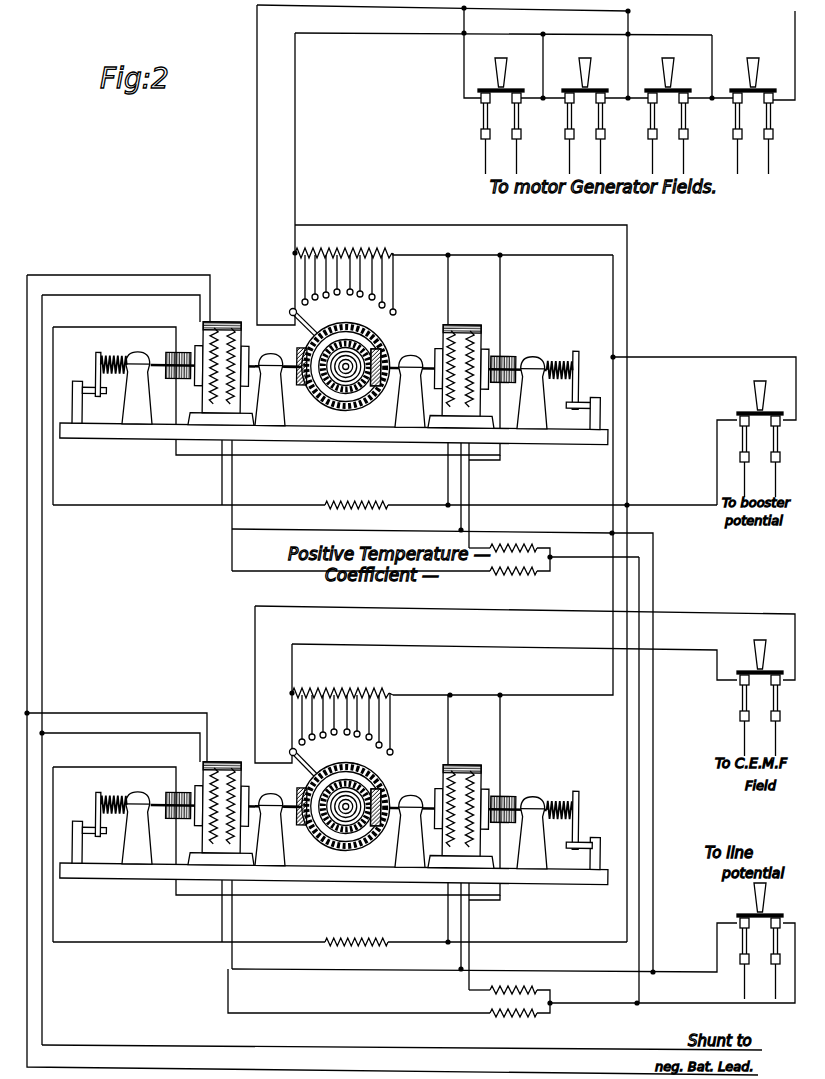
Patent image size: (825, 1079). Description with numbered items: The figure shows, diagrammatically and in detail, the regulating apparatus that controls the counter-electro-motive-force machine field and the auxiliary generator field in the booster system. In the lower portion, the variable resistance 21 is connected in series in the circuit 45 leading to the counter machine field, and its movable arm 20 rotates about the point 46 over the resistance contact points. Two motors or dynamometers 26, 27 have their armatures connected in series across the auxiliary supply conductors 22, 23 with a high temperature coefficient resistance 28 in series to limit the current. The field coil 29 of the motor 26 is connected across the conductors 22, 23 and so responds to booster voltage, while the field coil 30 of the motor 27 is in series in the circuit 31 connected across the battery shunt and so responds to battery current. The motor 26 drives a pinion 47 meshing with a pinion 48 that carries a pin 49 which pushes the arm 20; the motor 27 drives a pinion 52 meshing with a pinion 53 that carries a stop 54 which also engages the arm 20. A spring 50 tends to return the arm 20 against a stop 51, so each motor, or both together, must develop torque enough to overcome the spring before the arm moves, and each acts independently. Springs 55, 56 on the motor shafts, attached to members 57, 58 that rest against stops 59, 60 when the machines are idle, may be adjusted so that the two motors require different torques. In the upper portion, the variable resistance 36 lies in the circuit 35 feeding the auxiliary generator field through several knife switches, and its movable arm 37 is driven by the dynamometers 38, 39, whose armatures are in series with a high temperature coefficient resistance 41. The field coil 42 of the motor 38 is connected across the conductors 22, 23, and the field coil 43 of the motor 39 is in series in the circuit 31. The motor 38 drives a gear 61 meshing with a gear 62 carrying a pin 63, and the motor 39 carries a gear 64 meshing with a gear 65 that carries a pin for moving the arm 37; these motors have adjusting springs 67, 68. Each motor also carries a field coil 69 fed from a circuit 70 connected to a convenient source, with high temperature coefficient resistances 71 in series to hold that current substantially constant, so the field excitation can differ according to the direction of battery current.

The movable arm 20 is at (332, 783).
The variable resistance 21 is at (343, 690).
The conductor 22 is at (778, 480).
The conductor 23 is at (744, 466).
The motor or dynamometer 26 is at (464, 790).
The motor or dynamometer 27 is at (223, 784).
The high temperature coefficient resistance 28 is at (355, 940).
The field coil of motor 26 29 is at (440, 789).
The field coil of motor 27 30 is at (191, 795).
The circuit 31 is at (353, 1047).
The circuit 35 is at (393, 41).
The variable resistance 36 is at (347, 250).
The movable arm 37 is at (298, 313).
The dynamometer 38 is at (460, 325).
The dynamometer 39 is at (224, 320).
The high temperature co-efficient resistance 41 is at (350, 503).
The field coil of dynamometer 38 42 is at (450, 325).
The field coil of dynamometer 39 43 is at (202, 330).
The circuit 45 is at (446, 608).
The point 46 is at (357, 802).
The pinion 47 is at (361, 807).
The pinion 48 is at (354, 824).
The pin 49 is at (332, 820).
The spring 50 is at (339, 829).
The stop 51 is at (290, 752).
The pinion 52 is at (330, 811).
The pinion 53 is at (354, 787).
The stop 54 is at (287, 797).
The spring 55 is at (560, 797).
The spring 56 is at (111, 790).
The member 57 is at (590, 820).
The member 58 is at (79, 810).
The stop 59 is at (592, 833).
The stop 60 is at (300, 352).
The gear 61 is at (380, 348).
The gear 62 is at (372, 398).
The pin 63 is at (318, 392).
The gear 64 is at (303, 384).
The gear 65 is at (352, 400).
The adjusting spring 67 is at (557, 357).
The adjusting spring 68 is at (124, 356).
The field coil 69 is at (238, 320).
The circuit 70 is at (683, 971).
The high temperature co-efficient resistance 71 is at (515, 546).